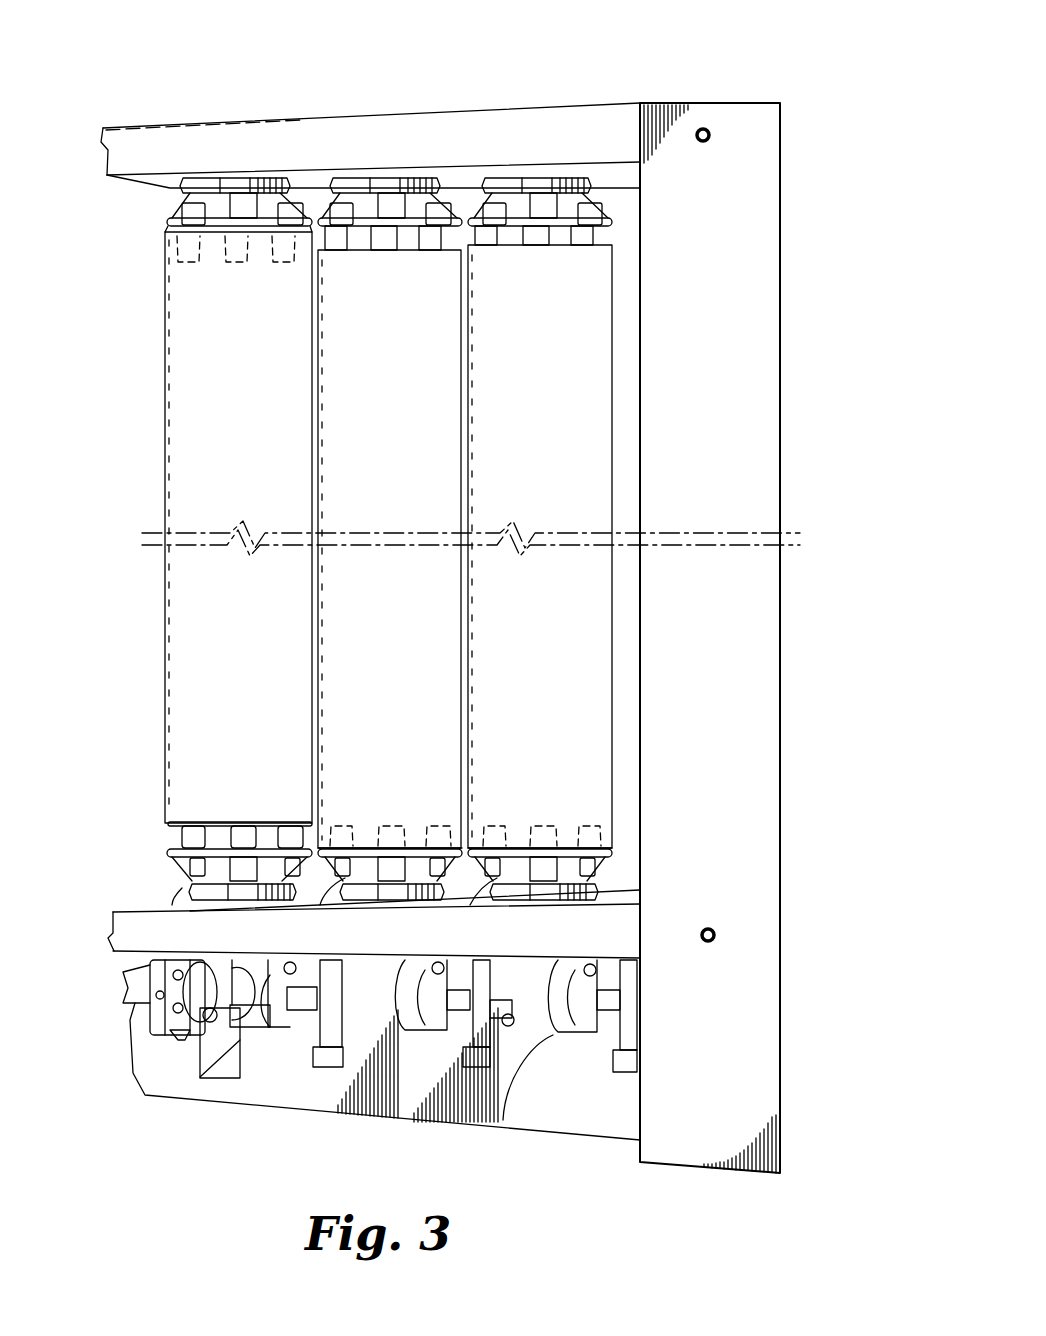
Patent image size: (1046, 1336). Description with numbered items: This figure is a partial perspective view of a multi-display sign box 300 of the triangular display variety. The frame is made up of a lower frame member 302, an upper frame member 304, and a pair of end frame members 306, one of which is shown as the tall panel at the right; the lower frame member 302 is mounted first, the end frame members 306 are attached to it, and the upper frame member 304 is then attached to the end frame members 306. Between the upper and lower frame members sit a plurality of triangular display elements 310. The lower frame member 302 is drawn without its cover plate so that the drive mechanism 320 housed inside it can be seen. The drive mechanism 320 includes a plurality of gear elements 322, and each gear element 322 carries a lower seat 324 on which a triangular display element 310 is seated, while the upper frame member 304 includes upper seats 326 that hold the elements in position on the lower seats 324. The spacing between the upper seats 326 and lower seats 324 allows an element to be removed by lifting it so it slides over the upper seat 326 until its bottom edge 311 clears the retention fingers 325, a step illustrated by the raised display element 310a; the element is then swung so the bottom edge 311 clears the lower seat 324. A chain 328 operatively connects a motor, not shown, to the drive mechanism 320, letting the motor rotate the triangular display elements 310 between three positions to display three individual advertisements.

The multi-display sign box 300 is at (836, 101).
The lower frame member 302 is at (145, 927).
The upper frame member 304 is at (397, 154).
The end frame member 306 is at (735, 618).
The triangular display element 310 is at (412, 424).
The display element 310a is at (268, 427).
The bottom edge 311 is at (178, 827).
The drive mechanism 320 is at (107, 1057).
The gear element 322 is at (410, 1025).
The lower seat 324 is at (283, 870).
The retention fingers 325 is at (238, 268).
The upper seat 326 is at (290, 200).
The chain 328 is at (193, 1040).